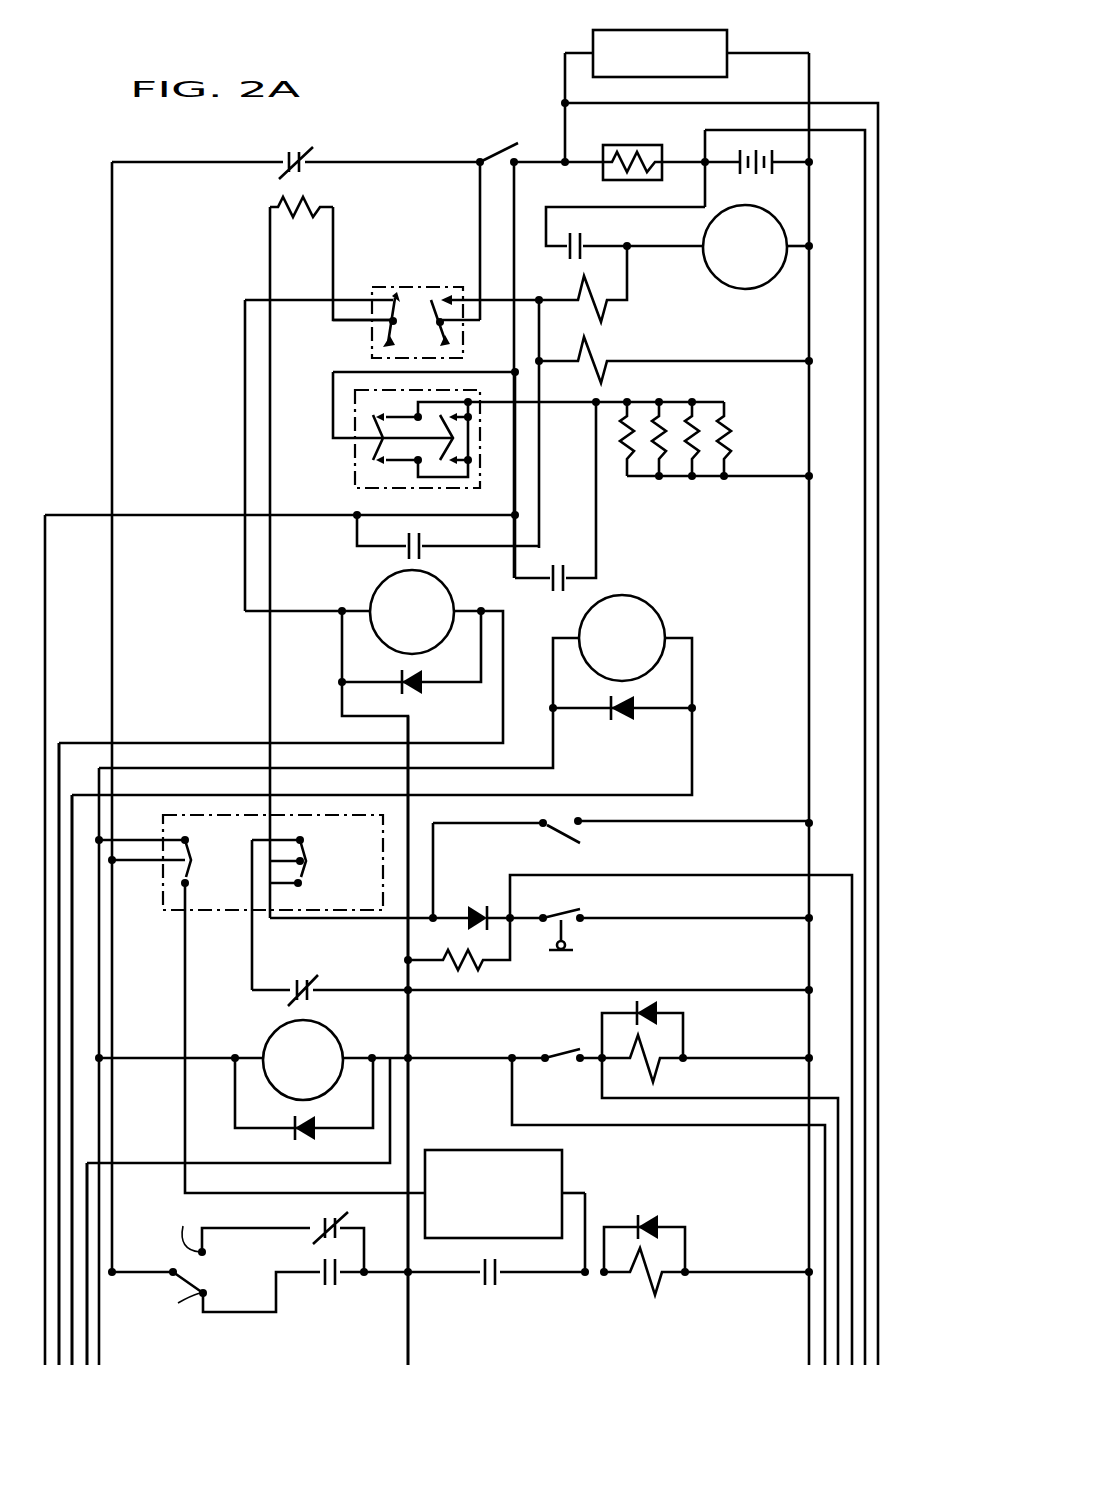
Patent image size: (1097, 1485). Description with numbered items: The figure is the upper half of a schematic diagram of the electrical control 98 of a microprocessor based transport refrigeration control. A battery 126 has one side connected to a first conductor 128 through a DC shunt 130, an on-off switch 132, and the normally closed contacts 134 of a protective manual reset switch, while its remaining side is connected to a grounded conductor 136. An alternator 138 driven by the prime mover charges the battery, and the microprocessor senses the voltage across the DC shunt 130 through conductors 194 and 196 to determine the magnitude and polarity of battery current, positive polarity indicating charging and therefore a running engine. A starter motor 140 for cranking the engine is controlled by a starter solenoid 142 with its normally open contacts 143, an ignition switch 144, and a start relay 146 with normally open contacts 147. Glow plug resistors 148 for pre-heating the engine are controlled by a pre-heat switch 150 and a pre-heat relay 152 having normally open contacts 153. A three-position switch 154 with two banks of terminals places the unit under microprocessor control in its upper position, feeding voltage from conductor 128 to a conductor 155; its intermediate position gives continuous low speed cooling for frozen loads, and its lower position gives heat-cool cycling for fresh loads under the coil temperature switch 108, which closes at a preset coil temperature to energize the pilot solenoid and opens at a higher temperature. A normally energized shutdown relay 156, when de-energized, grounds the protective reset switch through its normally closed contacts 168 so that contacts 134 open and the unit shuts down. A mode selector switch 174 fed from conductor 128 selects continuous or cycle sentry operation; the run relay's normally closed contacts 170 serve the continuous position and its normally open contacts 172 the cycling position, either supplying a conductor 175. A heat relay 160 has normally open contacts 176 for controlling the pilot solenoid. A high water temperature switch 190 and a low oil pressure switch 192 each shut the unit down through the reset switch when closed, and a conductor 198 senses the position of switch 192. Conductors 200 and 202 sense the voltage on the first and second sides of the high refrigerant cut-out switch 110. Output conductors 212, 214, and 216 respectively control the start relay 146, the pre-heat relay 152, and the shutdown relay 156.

The electrical control 98 is at (280, 743).
The coil temperature switch 108 is at (562, 1172).
The high refrigerant cut-out switch (HPCO) 110 is at (566, 1066).
The battery 126 is at (757, 178).
The first conductor 128 is at (112, 176).
The DC shunt 130 is at (636, 145).
The on-off switch 132 is at (500, 144).
The normally closed contacts of protective reset switch SSW 134 is at (291, 150).
The conductor 136 is at (809, 214).
The alternator 138 is at (730, 44).
The starter motor 140 is at (752, 285).
The starter solenoid 142 is at (672, 397).
The normally open contacts of starter solenoid 143 is at (588, 240).
The ignition switch 144 is at (411, 287).
The start relay 146 is at (281, 967).
The normally open contacts of start relay 147 is at (405, 559).
The glow plug resistors (GP) 148 is at (722, 420).
The pre-heat switch 150 is at (355, 488).
The pre-heat relay 152 is at (386, 695).
The normally open contacts of pre-heat relay 153 is at (565, 565).
The three-position switch 154 is at (218, 912).
The conductor 155 is at (95, 1032).
The shutdown relay 156 is at (299, 1091).
The heat relay 160 is at (606, 1156).
The normally closed contacts of shutdown relay 168 is at (306, 975).
The normally closed contacts of run relay 170 is at (330, 1220).
The normally open contacts of run relay 172 is at (332, 1285).
The mode selector switch 174 is at (258, 1259).
The conductor 175 is at (412, 1084).
The normally open contacts of heat relay 176 is at (488, 1285).
The engine coolant temperature switch (HWT) 190 is at (561, 868).
The low oil pressure switch (LOPS) 192 is at (578, 934).
The conductor 194 is at (822, 103).
The conductor 196 is at (858, 165).
The conductor 198 is at (730, 875).
The conductor 200 is at (556, 982).
The conductor 202 is at (742, 1125).
The output conductor 212 is at (60, 1352).
The output conductor 214 is at (73, 1330).
The output conductor 216 is at (121, 1163).